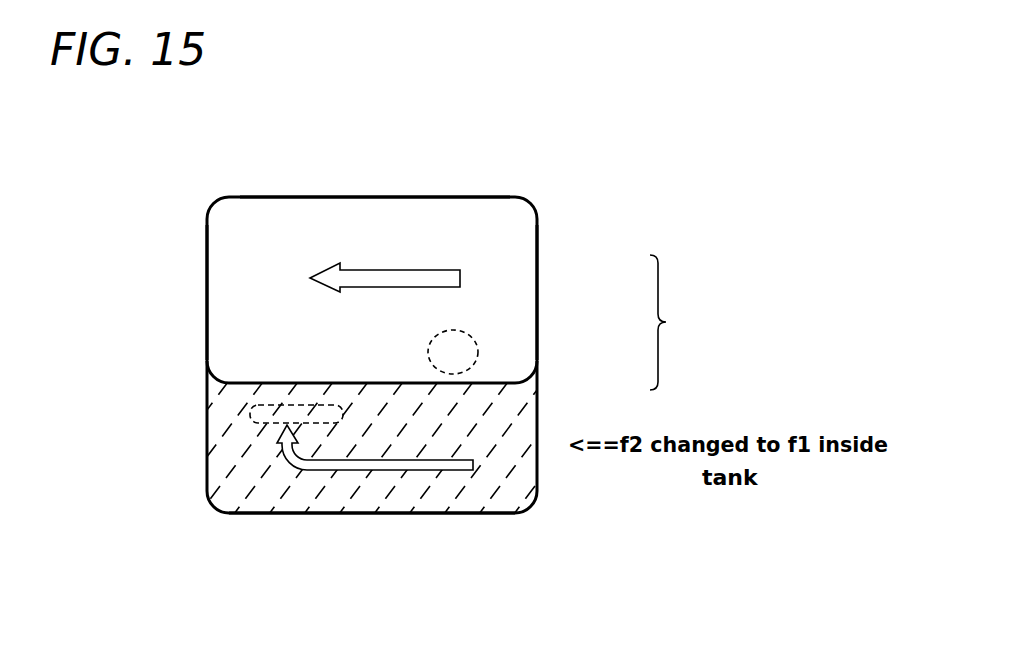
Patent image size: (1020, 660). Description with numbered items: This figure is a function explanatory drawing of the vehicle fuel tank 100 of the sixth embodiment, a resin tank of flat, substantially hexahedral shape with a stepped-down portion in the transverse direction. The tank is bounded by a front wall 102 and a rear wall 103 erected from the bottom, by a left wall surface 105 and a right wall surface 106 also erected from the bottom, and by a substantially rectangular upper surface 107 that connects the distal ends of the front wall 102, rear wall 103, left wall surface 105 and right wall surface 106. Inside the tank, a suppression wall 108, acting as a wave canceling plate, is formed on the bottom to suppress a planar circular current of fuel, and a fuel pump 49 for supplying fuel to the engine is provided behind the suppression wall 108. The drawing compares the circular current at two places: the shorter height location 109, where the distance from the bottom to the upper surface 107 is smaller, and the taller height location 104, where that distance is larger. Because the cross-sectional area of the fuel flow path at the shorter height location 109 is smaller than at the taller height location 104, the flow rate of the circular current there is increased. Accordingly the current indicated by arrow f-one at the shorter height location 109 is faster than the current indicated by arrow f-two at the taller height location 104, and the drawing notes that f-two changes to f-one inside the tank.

The vehicle fuel tank 100 is at (236, 171).
The front wall 102 is at (207, 247).
The rear wall 103 is at (537, 232).
The taller height location 104 is at (520, 297).
The left wall surface 105 is at (372, 513).
The right wall surface 106 is at (363, 196).
The upper surface 107 is at (682, 322).
The suppression wall 108 is at (300, 405).
The shorter height location 109 is at (525, 412).
The fuel pump 49 is at (478, 350).